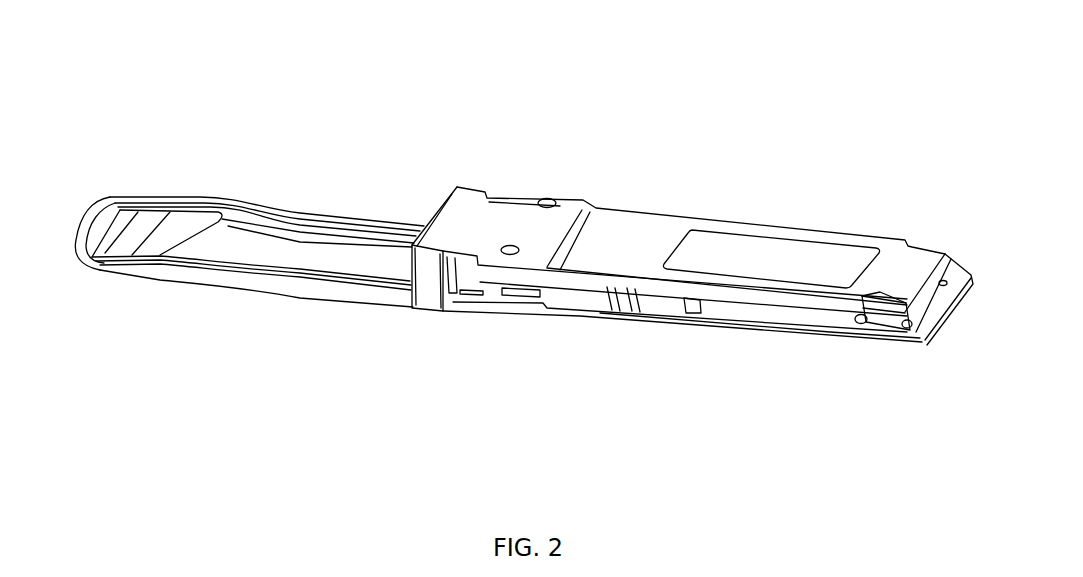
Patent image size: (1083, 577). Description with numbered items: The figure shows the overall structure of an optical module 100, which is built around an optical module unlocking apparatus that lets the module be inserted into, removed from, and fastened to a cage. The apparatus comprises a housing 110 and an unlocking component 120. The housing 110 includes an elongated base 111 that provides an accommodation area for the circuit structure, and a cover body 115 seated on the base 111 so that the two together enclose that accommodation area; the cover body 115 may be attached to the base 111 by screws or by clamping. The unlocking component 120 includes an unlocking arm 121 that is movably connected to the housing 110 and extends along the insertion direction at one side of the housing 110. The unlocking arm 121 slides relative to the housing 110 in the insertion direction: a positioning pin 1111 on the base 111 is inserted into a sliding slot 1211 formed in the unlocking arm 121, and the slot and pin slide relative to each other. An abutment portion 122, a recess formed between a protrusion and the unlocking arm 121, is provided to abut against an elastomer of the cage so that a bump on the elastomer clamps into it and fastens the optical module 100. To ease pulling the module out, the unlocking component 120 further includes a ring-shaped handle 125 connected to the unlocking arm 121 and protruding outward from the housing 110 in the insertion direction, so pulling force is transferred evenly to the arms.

The optical module 100 is at (747, 233).
The housing 110 is at (850, 432).
The base 111 is at (778, 325).
The cover body 115 is at (898, 270).
The unlocking component 120 is at (518, 80).
The unlocking arm 121 is at (490, 280).
The abutment portion 122 is at (690, 305).
The handle 125 is at (280, 208).
The positioning pin 1111 is at (510, 292).
The sliding slot 1211 is at (528, 290).